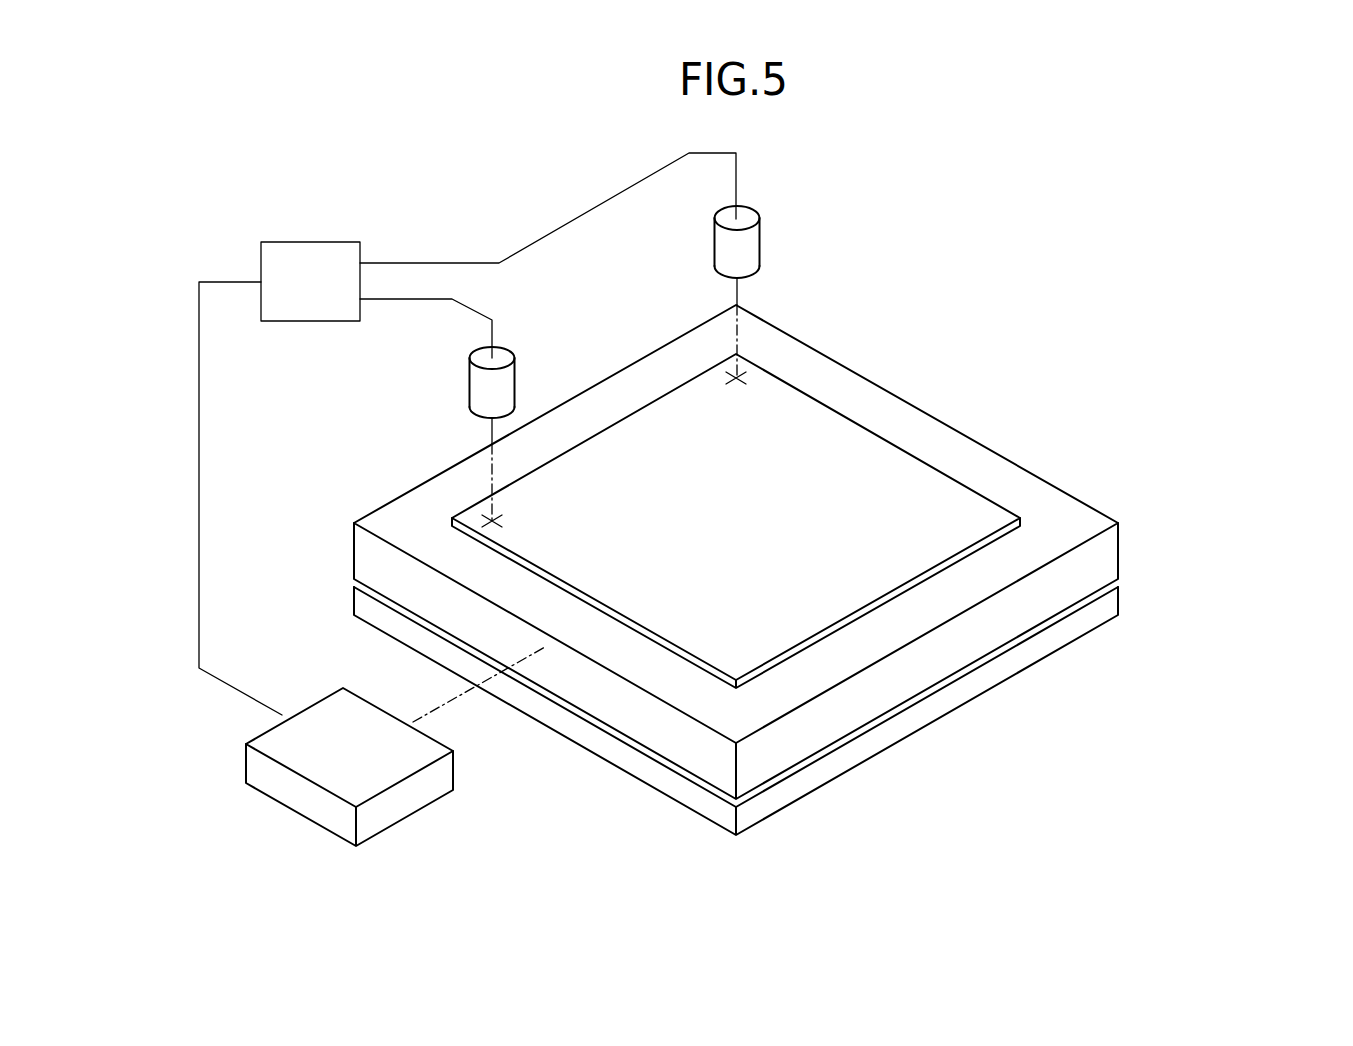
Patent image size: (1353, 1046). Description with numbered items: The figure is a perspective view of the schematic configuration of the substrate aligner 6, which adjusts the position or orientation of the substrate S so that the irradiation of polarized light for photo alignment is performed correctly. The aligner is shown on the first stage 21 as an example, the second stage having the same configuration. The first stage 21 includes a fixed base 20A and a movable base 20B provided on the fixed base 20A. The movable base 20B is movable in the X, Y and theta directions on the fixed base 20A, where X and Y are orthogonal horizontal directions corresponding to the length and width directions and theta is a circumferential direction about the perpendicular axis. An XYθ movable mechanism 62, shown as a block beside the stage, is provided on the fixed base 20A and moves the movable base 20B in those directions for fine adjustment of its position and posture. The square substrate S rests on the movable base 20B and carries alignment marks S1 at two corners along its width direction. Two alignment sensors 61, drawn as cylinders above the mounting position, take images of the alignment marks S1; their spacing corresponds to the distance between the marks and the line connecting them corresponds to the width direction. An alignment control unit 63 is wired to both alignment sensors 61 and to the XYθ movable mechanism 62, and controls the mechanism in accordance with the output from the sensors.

The substrate aligner 6 is at (175, 212).
The alignment sensor 61 is at (752, 252).
The XYθ movable mechanism 62 is at (415, 795).
The alignment control unit 63 is at (305, 248).
The substrate S is at (922, 478).
The alignment mark S1 is at (745, 381).
The fixed base 20A is at (1111, 606).
The movable base 20B is at (1105, 564).
The first stage 21 is at (837, 570).